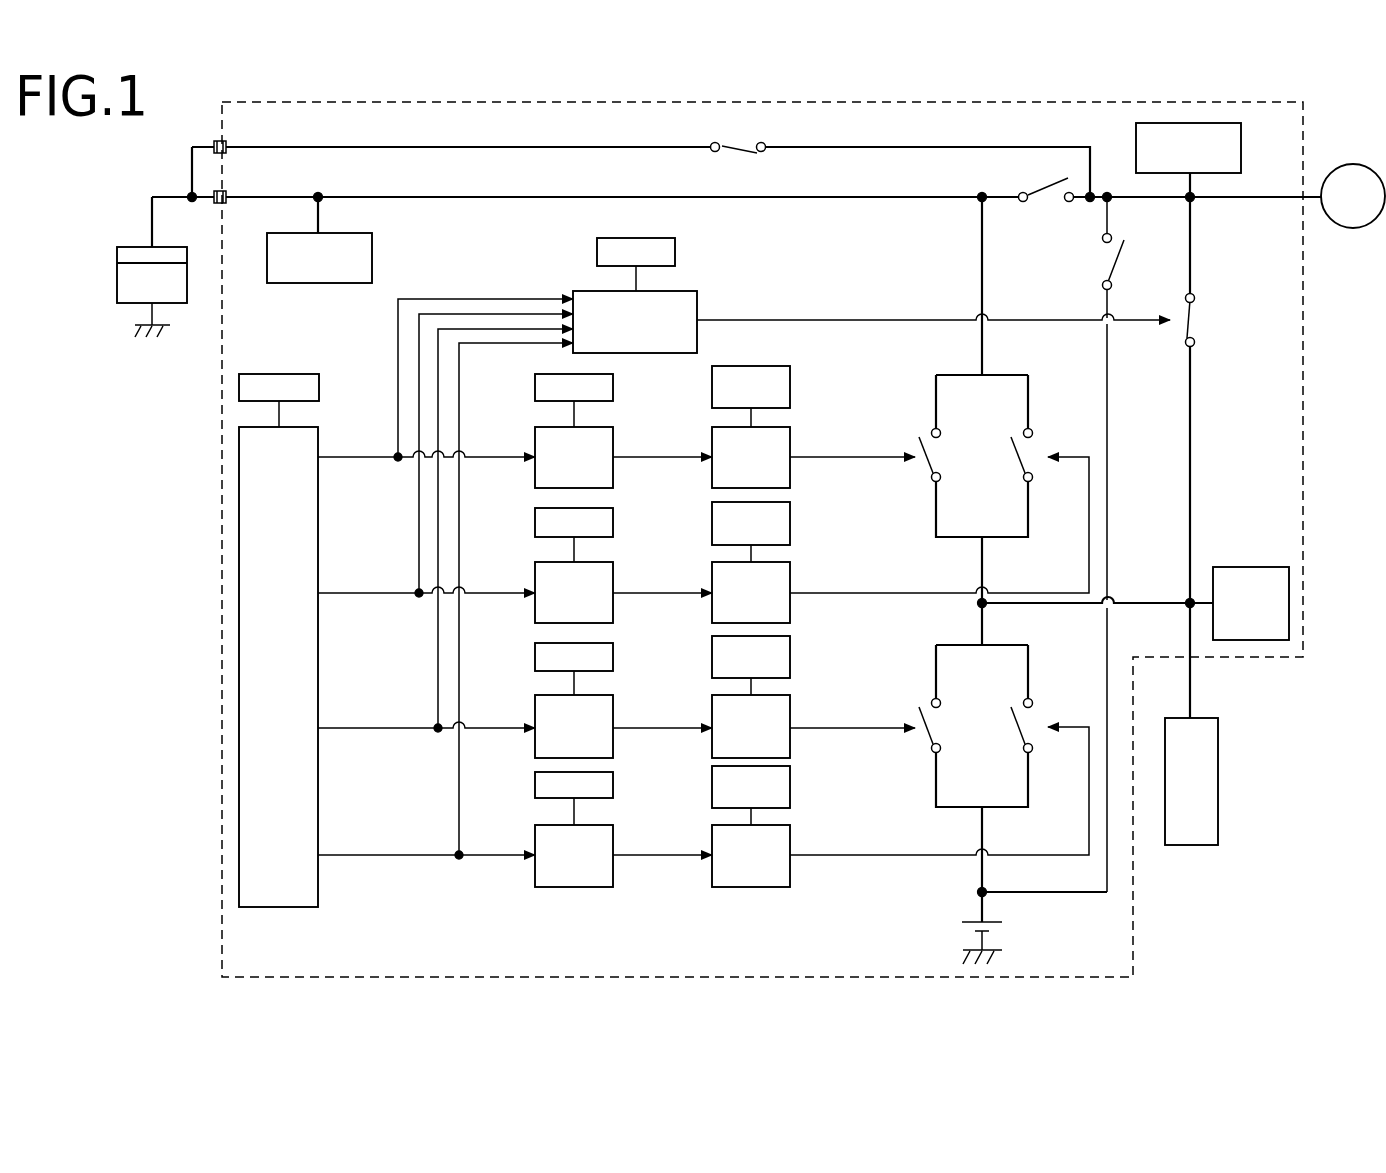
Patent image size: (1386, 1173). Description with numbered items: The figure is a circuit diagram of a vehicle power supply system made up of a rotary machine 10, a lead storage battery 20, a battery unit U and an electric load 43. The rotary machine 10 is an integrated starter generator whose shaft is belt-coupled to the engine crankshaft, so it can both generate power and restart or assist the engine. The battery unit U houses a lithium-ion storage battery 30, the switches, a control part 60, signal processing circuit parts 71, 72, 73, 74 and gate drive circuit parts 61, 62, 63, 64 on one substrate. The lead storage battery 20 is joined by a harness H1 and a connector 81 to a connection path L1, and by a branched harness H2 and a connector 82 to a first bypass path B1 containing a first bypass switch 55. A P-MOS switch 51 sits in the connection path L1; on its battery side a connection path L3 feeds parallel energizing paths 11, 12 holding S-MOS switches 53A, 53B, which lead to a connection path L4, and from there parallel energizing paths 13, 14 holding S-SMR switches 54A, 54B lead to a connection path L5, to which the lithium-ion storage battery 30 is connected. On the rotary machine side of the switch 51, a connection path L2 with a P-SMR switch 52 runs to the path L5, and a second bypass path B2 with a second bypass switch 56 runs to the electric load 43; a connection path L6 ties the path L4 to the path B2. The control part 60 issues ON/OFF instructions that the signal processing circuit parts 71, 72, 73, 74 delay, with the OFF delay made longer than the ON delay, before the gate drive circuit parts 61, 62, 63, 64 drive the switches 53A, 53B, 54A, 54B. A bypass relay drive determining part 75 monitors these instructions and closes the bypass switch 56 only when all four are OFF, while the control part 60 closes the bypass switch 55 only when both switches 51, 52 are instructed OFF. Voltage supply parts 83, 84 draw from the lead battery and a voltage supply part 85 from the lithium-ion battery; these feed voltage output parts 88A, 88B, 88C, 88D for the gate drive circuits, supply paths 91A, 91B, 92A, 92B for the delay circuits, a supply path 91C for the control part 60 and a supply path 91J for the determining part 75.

The rotary machine 10 is at (1353, 228).
The energizing path 11 is at (934, 372).
The energizing path 12 is at (1032, 372).
The energizing path 13 is at (934, 668).
The energizing path 14 is at (1030, 668).
The lead storage battery 20 is at (168, 247).
The lithium-ion storage battery 30 is at (998, 919).
The electric load 43 is at (1218, 775).
The P-MOS switch 51 is at (1048, 186).
The P-SMR switch 52 is at (1118, 260).
The S-MOS switch 53A is at (926, 475).
The S-MOS switch 53B is at (1018, 475).
The S-SMR switch 54A is at (926, 766).
The S-SMR switch 54B is at (1018, 766).
The first bypass switch 55 is at (740, 147).
The second bypass switch 56 is at (1185, 340).
The control part 60 is at (318, 436).
The gate drive circuit part 61 is at (790, 436).
The gate drive circuit part 62 is at (790, 572).
The gate drive circuit part 63 is at (790, 706).
The gate drive circuit part 64 is at (790, 836).
The signal processing circuit part 71 is at (535, 441).
The signal processing circuit part 72 is at (535, 577).
The signal processing circuit part 73 is at (535, 711).
The signal processing circuit part 74 is at (535, 839).
The bypass relay drive determining part 75 is at (688, 353).
The connector 81 is at (232, 195).
The connector 82 is at (232, 145).
The voltage supply part 83 is at (372, 258).
The voltage supply part 84 is at (1241, 148).
The voltage supply part 85 is at (1245, 567).
The voltage output part 88A is at (790, 386).
The voltage output part 88B is at (790, 521).
The voltage output part 88C is at (790, 656).
The voltage output part 88D is at (790, 786).
The supply path 91A is at (535, 389).
The supply path 91B is at (535, 658).
The supply path 91C is at (319, 388).
The supply path 91J is at (597, 253).
The supply path 92A is at (535, 524).
The supply path 92B is at (535, 786).
The harness H1 is at (176, 197).
The harness H2 is at (208, 145).
The first bypass path B1 is at (820, 147).
The second bypass path B2 is at (1190, 494).
The connection path L1 is at (820, 197).
The connection path L2 is at (1104, 319).
The connection path L3 is at (982, 272).
The connection path L4 is at (982, 626).
The connection path L5 is at (982, 873).
The connection path L6 is at (1141, 603).
The battery unit U is at (1303, 133).